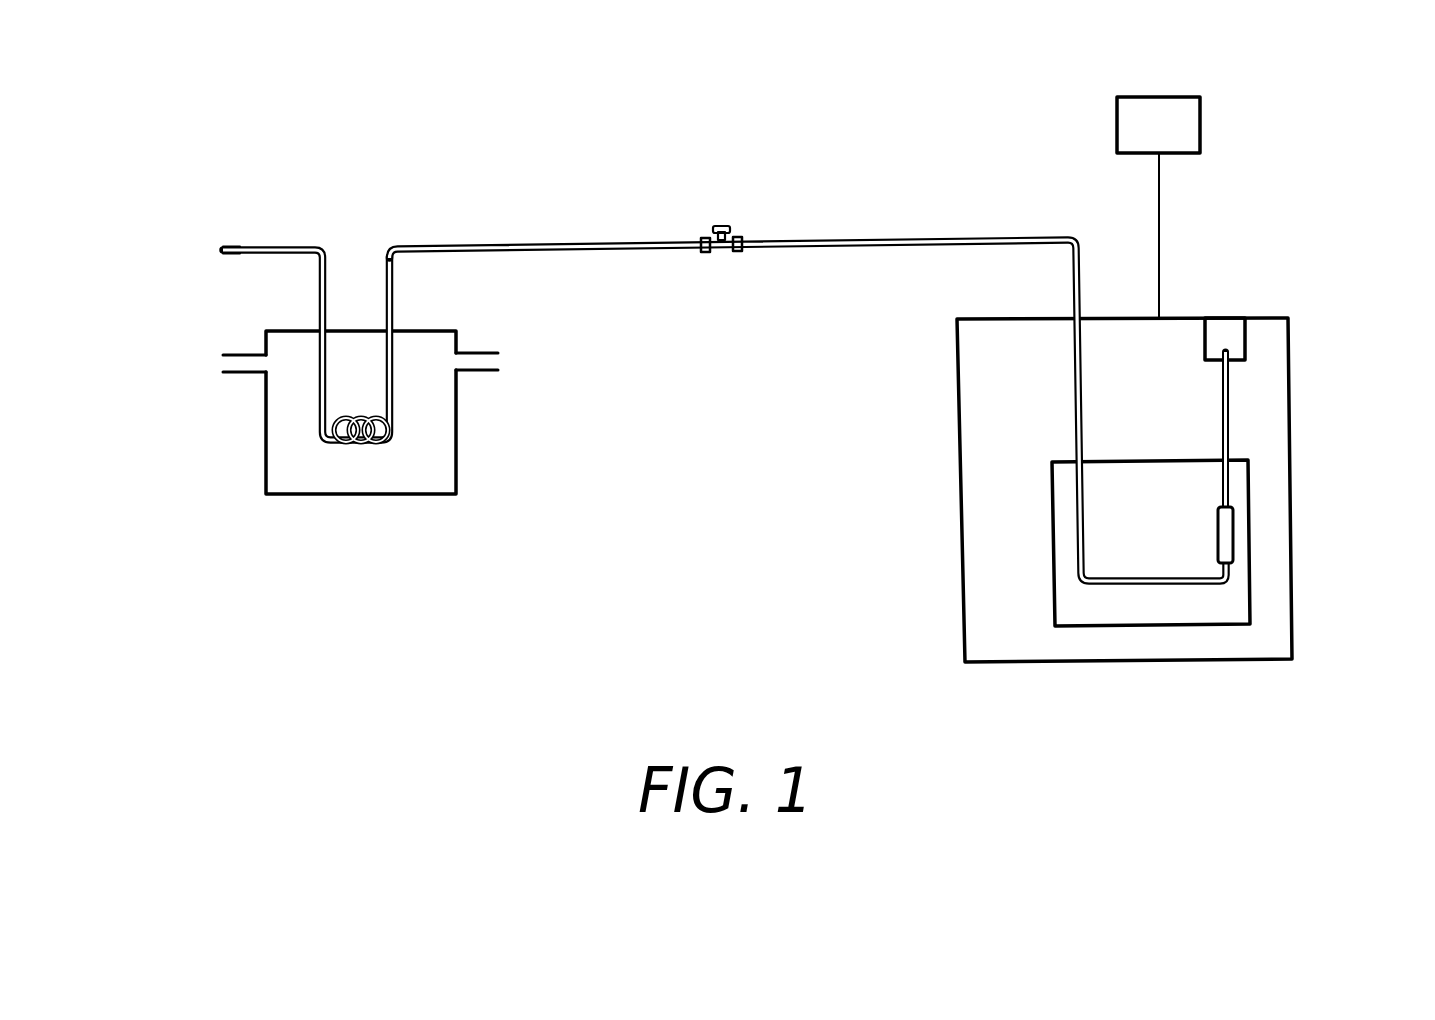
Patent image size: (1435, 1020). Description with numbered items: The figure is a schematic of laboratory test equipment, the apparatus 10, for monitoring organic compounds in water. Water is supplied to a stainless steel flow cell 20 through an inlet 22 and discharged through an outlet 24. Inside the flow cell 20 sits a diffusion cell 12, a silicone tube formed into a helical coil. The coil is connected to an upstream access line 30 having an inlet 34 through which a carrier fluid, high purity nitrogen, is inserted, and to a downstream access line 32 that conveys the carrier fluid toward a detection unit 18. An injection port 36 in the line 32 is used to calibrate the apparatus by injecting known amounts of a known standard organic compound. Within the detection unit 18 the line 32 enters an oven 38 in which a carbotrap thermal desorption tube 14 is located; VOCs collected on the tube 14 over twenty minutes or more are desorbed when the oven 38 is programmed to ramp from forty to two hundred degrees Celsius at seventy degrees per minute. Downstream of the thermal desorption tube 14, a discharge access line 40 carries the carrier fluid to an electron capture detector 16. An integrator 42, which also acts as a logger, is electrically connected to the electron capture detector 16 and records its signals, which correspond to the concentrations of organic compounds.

The system 10 is at (599, 597).
The diffusion cell 12 is at (397, 437).
The carbotrap thermal desorption tube 14 is at (1233, 537).
The electron capture detector 16 is at (1223, 318).
The detection unit 18 is at (958, 478).
The stainless steel flow cell 20 is at (425, 493).
The inlet 22 is at (206, 365).
The outlet 24 is at (495, 360).
The upstream access line 30 is at (317, 292).
The downstream access line 32 is at (562, 245).
The inlet 34 is at (205, 253).
The injection port 36 is at (722, 253).
The oven 38 is at (1052, 563).
The discharge access line 40 is at (1230, 427).
The integrator 42 is at (1202, 133).